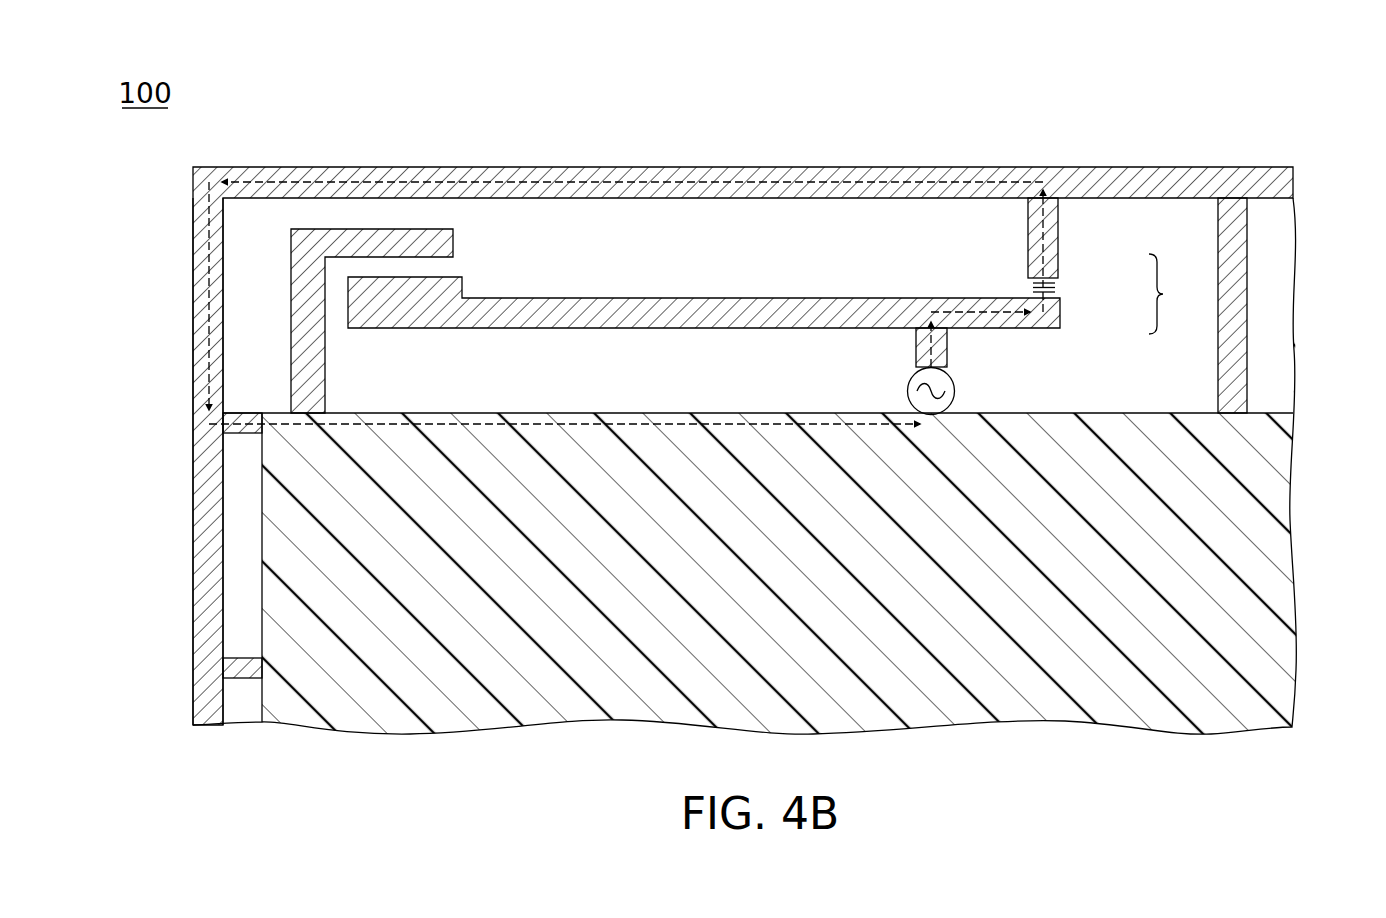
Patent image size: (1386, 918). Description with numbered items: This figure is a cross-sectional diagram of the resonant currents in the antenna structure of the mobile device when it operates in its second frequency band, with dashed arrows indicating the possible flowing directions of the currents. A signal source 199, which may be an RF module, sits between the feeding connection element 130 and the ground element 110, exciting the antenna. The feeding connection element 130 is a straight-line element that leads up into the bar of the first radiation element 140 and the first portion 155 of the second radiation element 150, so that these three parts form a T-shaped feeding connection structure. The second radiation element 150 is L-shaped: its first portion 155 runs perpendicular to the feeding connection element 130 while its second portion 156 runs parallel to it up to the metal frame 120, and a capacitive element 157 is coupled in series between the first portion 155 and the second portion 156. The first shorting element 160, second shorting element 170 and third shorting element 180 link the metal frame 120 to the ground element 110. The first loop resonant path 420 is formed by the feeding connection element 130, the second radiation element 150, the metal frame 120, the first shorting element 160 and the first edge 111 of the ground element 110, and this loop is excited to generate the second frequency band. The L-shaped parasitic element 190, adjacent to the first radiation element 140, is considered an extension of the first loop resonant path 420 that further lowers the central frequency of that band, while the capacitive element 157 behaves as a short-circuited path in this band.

The ground element 110 is at (1243, 551).
The first edge 111 is at (578, 415).
The metal frame 120 is at (618, 178).
The feeding connection element 130 is at (915, 343).
The first radiation element 140 is at (618, 297).
The second radiation element 150 is at (1181, 294).
The first portion 155 is at (1003, 327).
The second portion 156 is at (1053, 237).
The capacitive element 157 is at (1033, 287).
The first shorting element 160 is at (243, 413).
The second shorting element 170 is at (1243, 306).
The third shorting element 180 is at (242, 668).
The parasitic element 190 is at (305, 313).
The signal source 199 is at (955, 390).
The first loop resonant path 420 is at (736, 180).